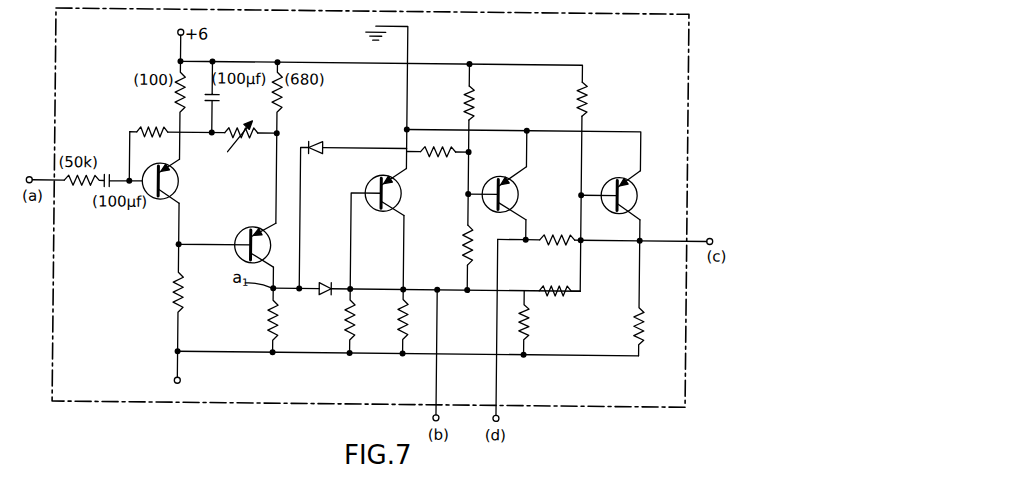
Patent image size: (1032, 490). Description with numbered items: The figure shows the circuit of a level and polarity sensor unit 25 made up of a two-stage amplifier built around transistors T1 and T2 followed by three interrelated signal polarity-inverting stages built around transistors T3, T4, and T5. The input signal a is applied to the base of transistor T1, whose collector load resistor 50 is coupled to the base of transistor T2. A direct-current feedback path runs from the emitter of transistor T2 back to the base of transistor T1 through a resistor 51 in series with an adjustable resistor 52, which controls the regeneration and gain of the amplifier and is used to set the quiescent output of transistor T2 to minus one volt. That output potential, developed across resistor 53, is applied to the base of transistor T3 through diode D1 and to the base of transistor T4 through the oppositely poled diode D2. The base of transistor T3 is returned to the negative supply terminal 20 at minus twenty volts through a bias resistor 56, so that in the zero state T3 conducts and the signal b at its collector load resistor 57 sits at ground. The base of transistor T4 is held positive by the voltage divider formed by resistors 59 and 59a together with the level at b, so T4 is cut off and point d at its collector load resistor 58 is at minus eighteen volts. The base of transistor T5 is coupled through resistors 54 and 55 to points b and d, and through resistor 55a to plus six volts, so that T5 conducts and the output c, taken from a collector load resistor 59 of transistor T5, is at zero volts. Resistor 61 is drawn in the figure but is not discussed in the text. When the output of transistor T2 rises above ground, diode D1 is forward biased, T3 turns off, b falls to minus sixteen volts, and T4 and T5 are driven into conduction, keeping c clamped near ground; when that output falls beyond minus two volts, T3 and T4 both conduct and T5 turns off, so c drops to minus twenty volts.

The level and polarity sensor unit 25 is at (138, 402).
The negative supply terminal 20 is at (167, 389).
The collector load resistor 50 is at (176, 277).
The resistor 51 is at (148, 127).
The adjustable resistor 52 is at (248, 138).
The resistor 53 is at (270, 314).
The resistor 54 is at (544, 291).
The resistor 55 is at (566, 244).
The resistor 55a is at (587, 107).
The bias resistor 56 is at (348, 318).
The collector load resistor 57 is at (402, 308).
The collector load resistor 58 is at (526, 332).
The collector load resistor 59 is at (466, 242).
The resistor 59a is at (474, 98).
The resistor 10k 61 is at (448, 156).
The transistor T1 is at (181, 186).
The transistor T2 is at (247, 229).
The transistor T3 is at (367, 179).
The transistor T4 is at (520, 195).
The transistor T5 is at (640, 195).
The diode D1 is at (332, 280).
The diode D2 is at (314, 139).